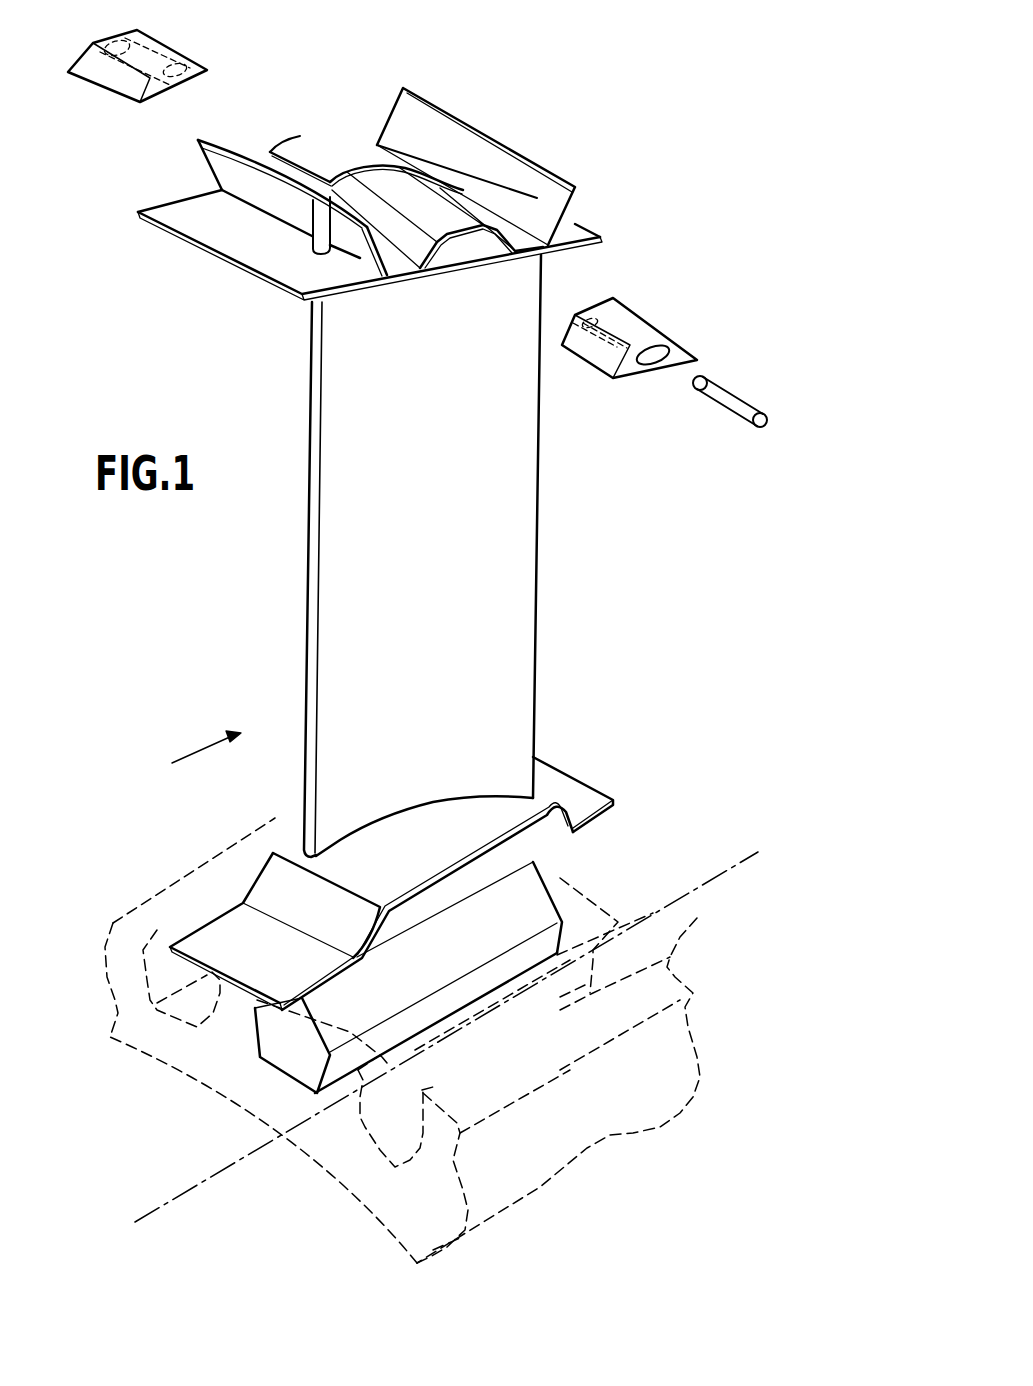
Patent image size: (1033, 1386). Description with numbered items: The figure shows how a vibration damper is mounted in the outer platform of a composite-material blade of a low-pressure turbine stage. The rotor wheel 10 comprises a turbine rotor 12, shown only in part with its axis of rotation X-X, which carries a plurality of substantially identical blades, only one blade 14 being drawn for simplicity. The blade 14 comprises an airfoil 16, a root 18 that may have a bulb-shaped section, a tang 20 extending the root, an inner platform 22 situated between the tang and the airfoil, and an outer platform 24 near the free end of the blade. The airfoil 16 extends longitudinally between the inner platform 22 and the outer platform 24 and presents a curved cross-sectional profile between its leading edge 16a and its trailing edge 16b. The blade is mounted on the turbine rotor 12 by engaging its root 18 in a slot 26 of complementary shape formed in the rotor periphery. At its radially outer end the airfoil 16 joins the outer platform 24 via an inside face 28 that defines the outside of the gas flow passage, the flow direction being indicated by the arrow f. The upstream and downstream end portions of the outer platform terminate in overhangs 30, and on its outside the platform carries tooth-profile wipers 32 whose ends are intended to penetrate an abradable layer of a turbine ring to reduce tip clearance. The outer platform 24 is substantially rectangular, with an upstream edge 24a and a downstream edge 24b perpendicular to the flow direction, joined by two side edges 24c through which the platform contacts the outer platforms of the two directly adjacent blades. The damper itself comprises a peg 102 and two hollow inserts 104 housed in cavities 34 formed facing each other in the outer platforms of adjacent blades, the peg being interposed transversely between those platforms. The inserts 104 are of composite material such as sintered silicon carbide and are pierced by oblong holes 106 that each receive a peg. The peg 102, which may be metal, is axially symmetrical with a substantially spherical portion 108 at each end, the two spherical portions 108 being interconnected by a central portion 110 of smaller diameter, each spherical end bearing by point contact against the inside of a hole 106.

The rotor wheel 10 is at (200, 1090).
The turbine rotor 12 is at (690, 932).
The blade 14 is at (278, 588).
The airfoil 16 is at (479, 495).
The leading edge 16a is at (317, 395).
The trailing edge 16b is at (545, 446).
The root 18 is at (292, 1055).
The tang 20 is at (506, 853).
The inner platform 22 is at (570, 782).
The outer platform 24 is at (579, 166).
The upstream edge 24a is at (232, 257).
The downstream edge 24b is at (570, 210).
The side edges 24c is at (181, 193).
The slot 26 is at (413, 1160).
The inside face 28 is at (347, 290).
The overhangs 30 is at (213, 222).
The wipers 32 is at (222, 142).
The cavities 34 is at (466, 246).
The peg 102 is at (746, 388).
The hollow inserts 104 is at (188, 44).
The holes 106 is at (95, 46).
The spherical portions 108 is at (690, 386).
The central portion 110 is at (732, 405).